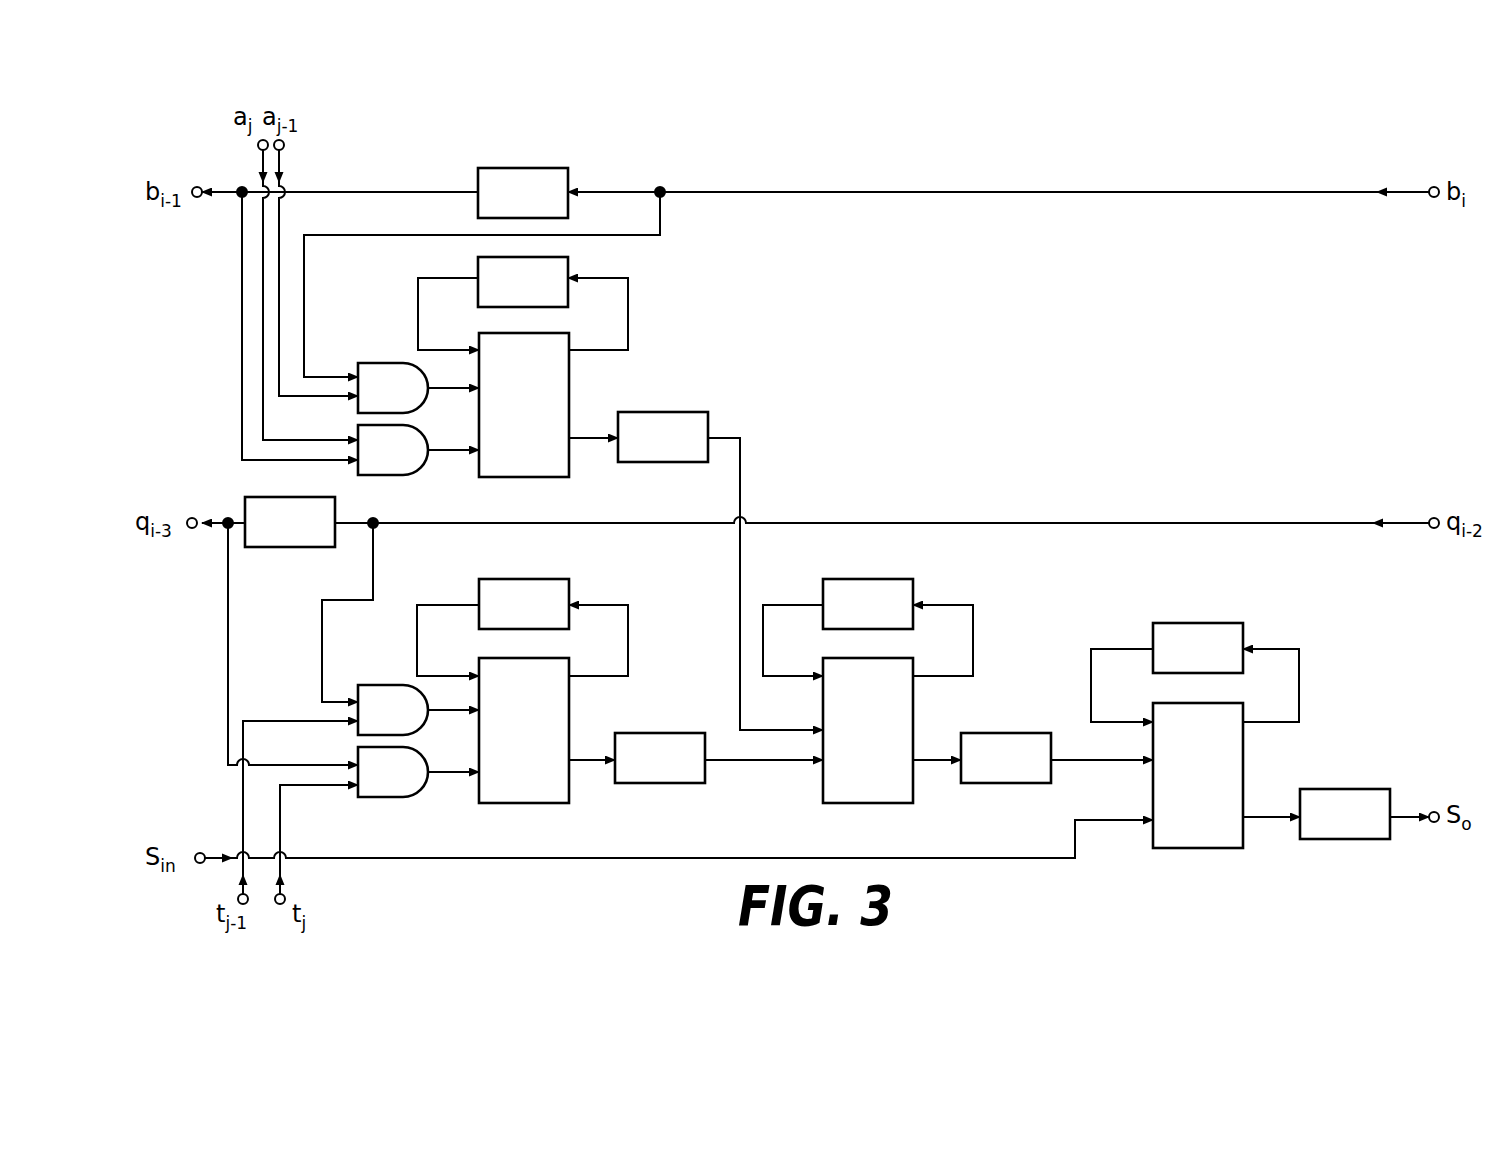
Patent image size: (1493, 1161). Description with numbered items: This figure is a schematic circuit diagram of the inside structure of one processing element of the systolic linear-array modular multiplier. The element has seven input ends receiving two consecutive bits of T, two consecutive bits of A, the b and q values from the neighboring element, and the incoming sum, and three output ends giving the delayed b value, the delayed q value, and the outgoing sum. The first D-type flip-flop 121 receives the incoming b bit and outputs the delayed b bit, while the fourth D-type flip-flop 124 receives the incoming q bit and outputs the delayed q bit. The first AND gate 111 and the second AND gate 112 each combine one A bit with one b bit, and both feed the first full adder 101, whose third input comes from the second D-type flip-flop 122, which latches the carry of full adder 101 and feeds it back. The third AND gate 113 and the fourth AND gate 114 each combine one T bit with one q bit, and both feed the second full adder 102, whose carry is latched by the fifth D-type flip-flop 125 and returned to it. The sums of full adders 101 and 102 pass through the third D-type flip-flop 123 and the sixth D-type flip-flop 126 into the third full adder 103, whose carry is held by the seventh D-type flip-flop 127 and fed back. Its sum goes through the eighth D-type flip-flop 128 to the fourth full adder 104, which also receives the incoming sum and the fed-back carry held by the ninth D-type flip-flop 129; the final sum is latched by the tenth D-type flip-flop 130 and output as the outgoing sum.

The first full adder 101 is at (558, 477).
The second full adder 102 is at (559, 803).
The third full adder 103 is at (913, 803).
The fourth full adder 104 is at (1195, 848).
The first AND gate 111 is at (383, 363).
The second AND gate 112 is at (415, 475).
The third AND gate 113 is at (385, 685).
The fourth AND gate 114 is at (405, 797).
The first D-type flip-flop 121 is at (530, 168).
The second D-type flip-flop 122 is at (568, 269).
The third D-type flip-flop 123 is at (700, 412).
The fourth D-type flip-flop 124 is at (289, 497).
The fifth D-type flip-flop 125 is at (528, 579).
The sixth D-type flip-flop 126 is at (640, 742).
The seventh D-type flip-flop 127 is at (873, 579).
The eighth D-type flip-flop 128 is at (1000, 733).
The ninth D-type flip-flop 129 is at (1228, 623).
The tenth D-type flip-flop 130 is at (1335, 789).